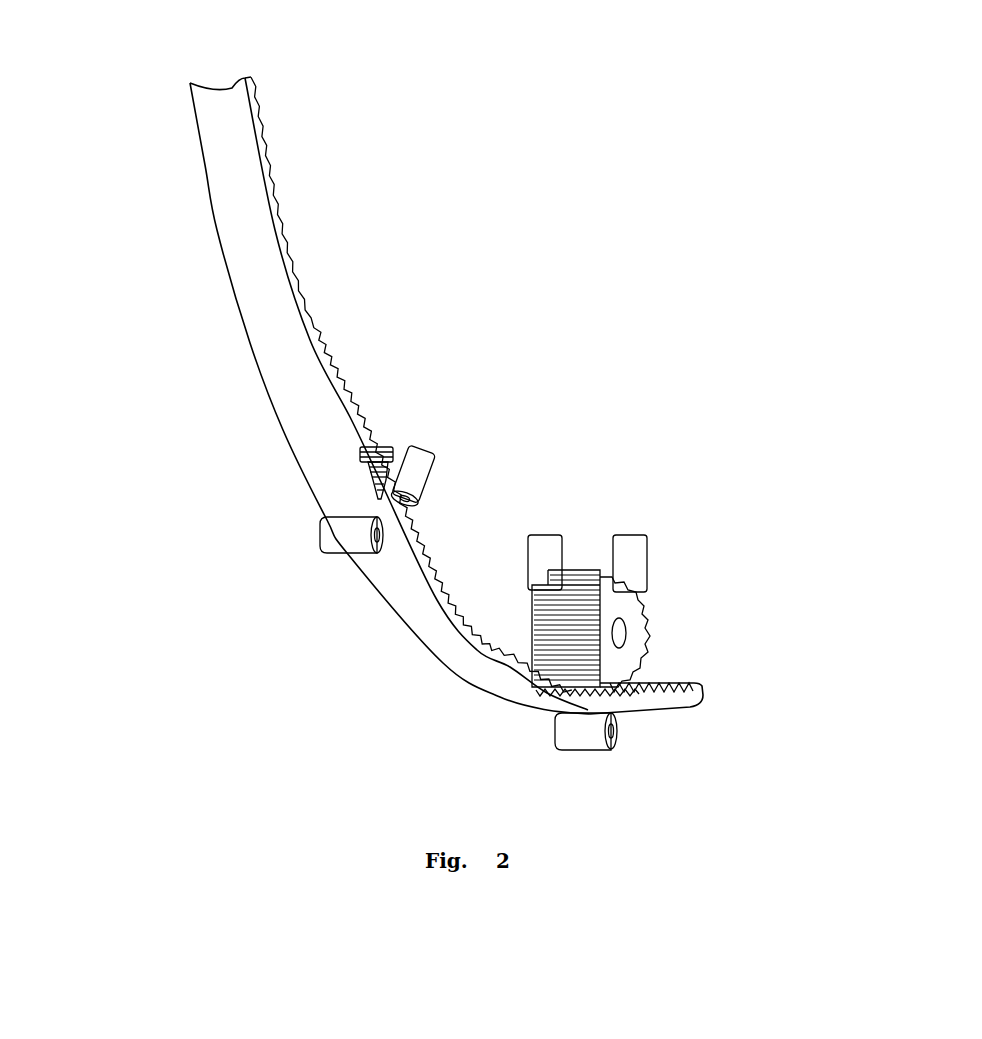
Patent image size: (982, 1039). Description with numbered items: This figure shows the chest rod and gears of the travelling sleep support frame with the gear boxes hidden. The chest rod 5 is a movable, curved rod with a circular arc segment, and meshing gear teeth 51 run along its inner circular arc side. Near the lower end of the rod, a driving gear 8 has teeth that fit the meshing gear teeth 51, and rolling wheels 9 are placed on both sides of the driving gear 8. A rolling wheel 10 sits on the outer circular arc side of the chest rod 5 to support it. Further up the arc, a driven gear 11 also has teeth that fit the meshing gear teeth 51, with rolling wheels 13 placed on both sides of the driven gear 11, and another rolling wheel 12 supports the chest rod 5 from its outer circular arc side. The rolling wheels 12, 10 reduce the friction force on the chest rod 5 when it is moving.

The chest rod 5 is at (226, 163).
The meshing gear teeth 51 is at (286, 198).
The driving gear 8 is at (588, 568).
The rolling wheels 9 is at (549, 544).
The rolling wheel 10 is at (618, 735).
The driven gear 11 is at (372, 450).
The rolling wheel 12 is at (330, 536).
The rolling wheels 13 is at (418, 456).